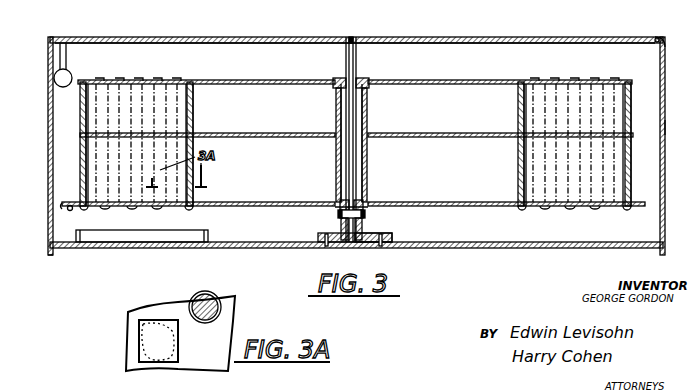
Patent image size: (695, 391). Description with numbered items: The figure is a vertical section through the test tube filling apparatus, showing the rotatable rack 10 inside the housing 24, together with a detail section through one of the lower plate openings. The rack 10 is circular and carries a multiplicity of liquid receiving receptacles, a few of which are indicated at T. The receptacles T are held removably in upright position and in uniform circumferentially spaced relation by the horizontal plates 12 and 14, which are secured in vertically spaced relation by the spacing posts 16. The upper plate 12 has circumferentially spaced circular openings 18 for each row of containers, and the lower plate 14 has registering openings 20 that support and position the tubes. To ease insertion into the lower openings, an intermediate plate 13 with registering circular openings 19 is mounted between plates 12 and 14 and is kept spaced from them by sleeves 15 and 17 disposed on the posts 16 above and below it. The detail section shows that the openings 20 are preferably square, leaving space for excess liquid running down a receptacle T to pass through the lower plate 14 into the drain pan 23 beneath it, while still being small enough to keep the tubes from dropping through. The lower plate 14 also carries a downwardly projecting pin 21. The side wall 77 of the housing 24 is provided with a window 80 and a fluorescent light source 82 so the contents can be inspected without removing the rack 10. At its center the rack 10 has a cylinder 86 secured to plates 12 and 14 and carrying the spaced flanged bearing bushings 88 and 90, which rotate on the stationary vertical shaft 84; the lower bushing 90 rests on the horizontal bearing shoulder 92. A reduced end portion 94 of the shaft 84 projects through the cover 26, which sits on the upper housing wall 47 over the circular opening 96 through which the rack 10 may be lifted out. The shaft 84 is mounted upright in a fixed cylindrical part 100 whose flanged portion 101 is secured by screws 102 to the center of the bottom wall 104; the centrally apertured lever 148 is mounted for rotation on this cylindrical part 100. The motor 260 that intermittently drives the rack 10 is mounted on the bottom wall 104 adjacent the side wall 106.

In FIG. 3, the rotatable rack 10 is at (466, 80).
In FIG. 3, the upper plate 12 is at (261, 84).
In FIG. 3, the intermediate plate 13 is at (253, 136).
In FIG. 3, the lower plate 14 is at (262, 205).
In FIG. 3, the sleeve 15 is at (82, 118).
In FIG. 3, the spacing post 16 is at (80, 107).
In FIG. 3A, the spacing post 16 is at (206, 300).
In FIG. 3, the sleeve 17 is at (80, 159).
In FIG. 3A, the sleeve 17 is at (198, 297).
In FIG. 3, the circular opening 18 is at (146, 78).
In FIG. 3, the circular opening 19 is at (150, 132).
In FIG. 3, the opening 20 is at (106, 209).
In FIG. 3A, the opening 20 is at (178, 336).
In FIG. 3, the downwardly projecting pin 21 is at (70, 210).
In FIG. 3, the drain pan 23 is at (208, 233).
In FIG. 3, the housing 24 is at (668, 84).
In FIG. 3, the cover 26 is at (480, 38).
In FIG. 3, the upper housing wall 47 is at (665, 40).
In FIG. 3, the side wall 77 is at (48, 231).
In FIG. 3, the window 80 is at (48, 178).
In FIG. 3, the light source 82 is at (67, 76).
In FIG. 3, the stationary vertical shaft 84 is at (346, 62).
In FIG. 3, the cylinder 86 is at (368, 125).
In FIG. 3, the flanged bearing bushing 88 is at (366, 78).
In FIG. 3, the flanged bearing bushing 90 is at (340, 208).
In FIG. 3, the horizontal bearing shoulder 92 is at (340, 217).
In FIG. 3, the reduced end portion 94 is at (351, 37).
In FIG. 3, the circular opening 96 is at (657, 44).
In FIG. 3, the cylindrical part 100 is at (365, 221).
In FIG. 3, the flanged portion 101 is at (392, 237).
In FIG. 3, the screw 102 is at (326, 246).
In FIG. 3, the bottom wall 104 is at (515, 244).
In FIG. 3, the side wall 106 is at (246, 55).
In FIG. 3, the lever 148 is at (318, 236).
In FIG. 3, the motor 260 is at (666, 130).
In FIG. 3, the test tube T is at (115, 75).
In FIG. 3A, the test tube T is at (157, 362).